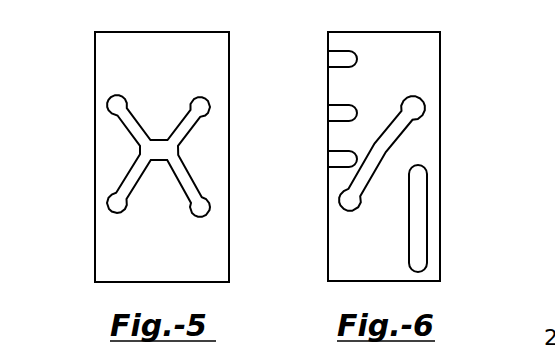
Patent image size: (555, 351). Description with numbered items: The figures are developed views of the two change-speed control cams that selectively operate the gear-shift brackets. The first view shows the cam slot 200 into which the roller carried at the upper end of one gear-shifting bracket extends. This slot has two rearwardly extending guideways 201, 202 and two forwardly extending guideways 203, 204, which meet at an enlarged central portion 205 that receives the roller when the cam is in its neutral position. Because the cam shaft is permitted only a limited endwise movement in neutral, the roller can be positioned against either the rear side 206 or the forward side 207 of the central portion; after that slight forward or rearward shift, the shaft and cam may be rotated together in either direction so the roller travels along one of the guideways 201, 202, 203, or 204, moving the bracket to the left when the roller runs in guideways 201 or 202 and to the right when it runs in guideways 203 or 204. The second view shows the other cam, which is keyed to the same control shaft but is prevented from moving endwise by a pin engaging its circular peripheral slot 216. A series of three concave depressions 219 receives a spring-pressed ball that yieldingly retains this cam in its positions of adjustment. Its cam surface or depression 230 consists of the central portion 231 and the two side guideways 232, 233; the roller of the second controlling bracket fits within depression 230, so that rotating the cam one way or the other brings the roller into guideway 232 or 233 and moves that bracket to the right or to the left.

In FIG. 5, the cam slot 200 is at (138, 140).
In FIG. 5, the rearwardly extending guideway 201 is at (127, 184).
In FIG. 5, the rearwardly extending guideway 202 is at (133, 112).
In FIG. 5, the forwardly extending guideway 203 is at (193, 192).
In FIG. 5, the forwardly extending guideway 204 is at (183, 110).
In FIG. 5, the enlarged central portion 205 is at (160, 160).
In FIG. 5, the rear side of central portion 206 is at (139, 152).
In FIG. 5, the forward side of central portion 207 is at (178, 152).
In FIG. 6, the circular peripheral slot 216 is at (420, 240).
In FIG. 6, the concave depressions 219 is at (342, 58).
In FIG. 6, the cam surface or depression 230 is at (387, 118).
In FIG. 6, the central portion 231 is at (383, 157).
In FIG. 6, the side guideway 232 is at (372, 198).
In FIG. 6, the side guideway 233 is at (408, 127).